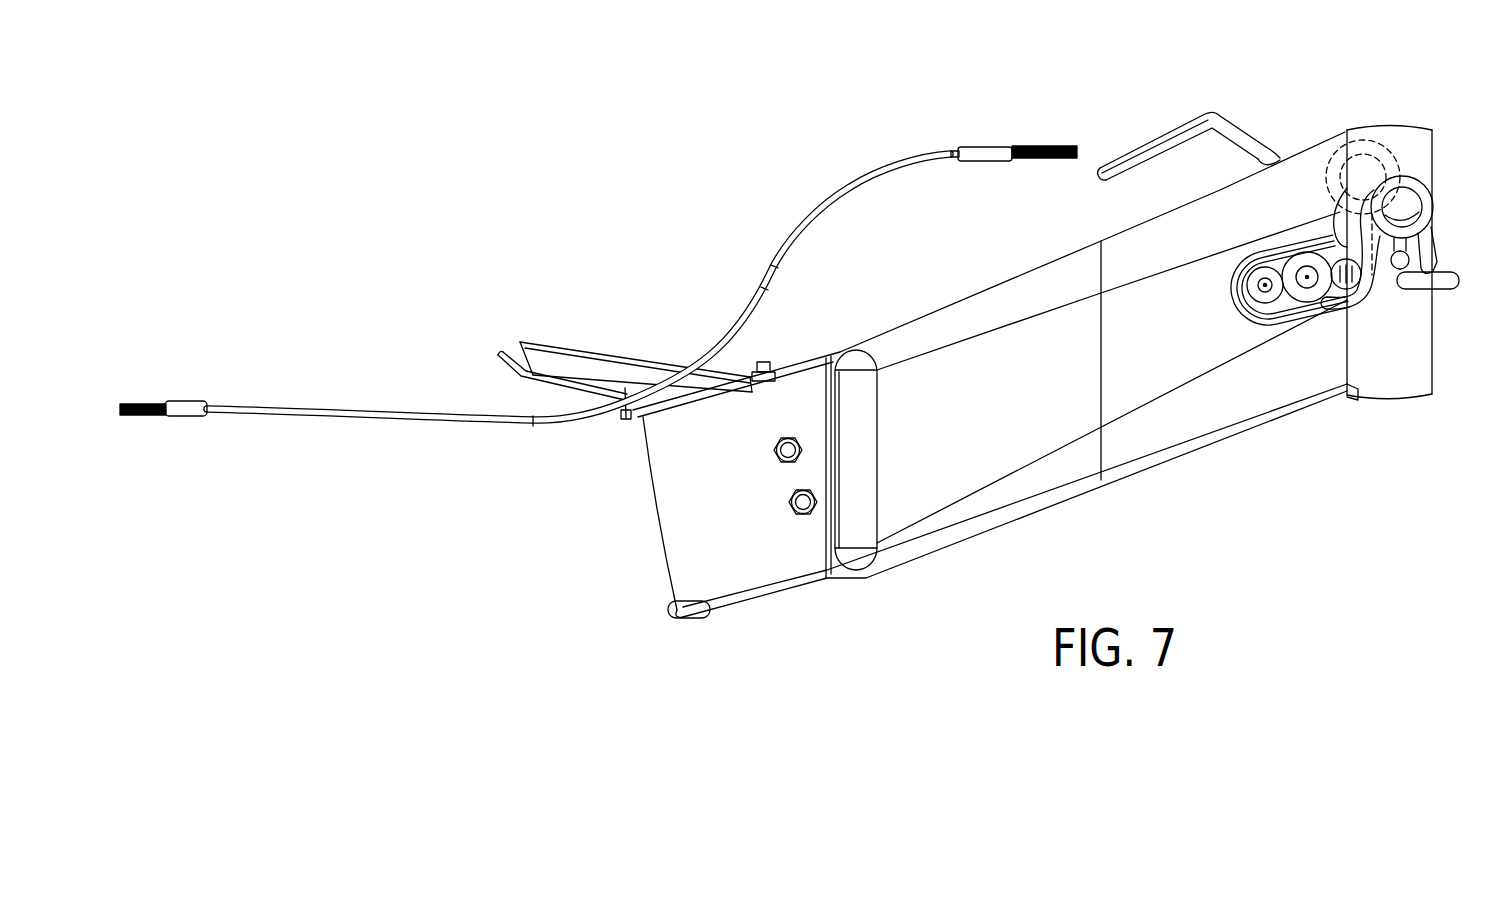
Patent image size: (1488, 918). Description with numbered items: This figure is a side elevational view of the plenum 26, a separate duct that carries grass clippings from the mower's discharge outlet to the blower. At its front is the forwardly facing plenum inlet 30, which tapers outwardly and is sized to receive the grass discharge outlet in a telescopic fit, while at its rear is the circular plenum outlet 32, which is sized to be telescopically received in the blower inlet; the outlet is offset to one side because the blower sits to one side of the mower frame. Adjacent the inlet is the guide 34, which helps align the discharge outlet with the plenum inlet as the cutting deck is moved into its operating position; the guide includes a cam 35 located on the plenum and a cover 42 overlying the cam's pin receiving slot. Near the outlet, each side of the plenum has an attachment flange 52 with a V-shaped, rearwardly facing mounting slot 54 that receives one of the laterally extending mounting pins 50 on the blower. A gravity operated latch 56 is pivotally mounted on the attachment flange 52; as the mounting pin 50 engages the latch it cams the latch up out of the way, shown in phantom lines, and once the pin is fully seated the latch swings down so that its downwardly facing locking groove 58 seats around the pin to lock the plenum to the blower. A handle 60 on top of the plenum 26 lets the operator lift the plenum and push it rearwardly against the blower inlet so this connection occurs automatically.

The plenum 26 is at (1037, 108).
The plenum inlet 30 is at (727, 475).
The plenum outlet 32 is at (1389, 128).
The guide 34 is at (598, 345).
The cam 35 is at (500, 371).
The cover 42 is at (582, 349).
The mounting pin 50 is at (1397, 270).
The attachment flange 52 is at (1285, 303).
The mounting slot 54 is at (1452, 268).
The gravity operated latch 56 is at (1433, 193).
The locking groove 58 is at (1428, 243).
The handle 60 is at (1194, 113).